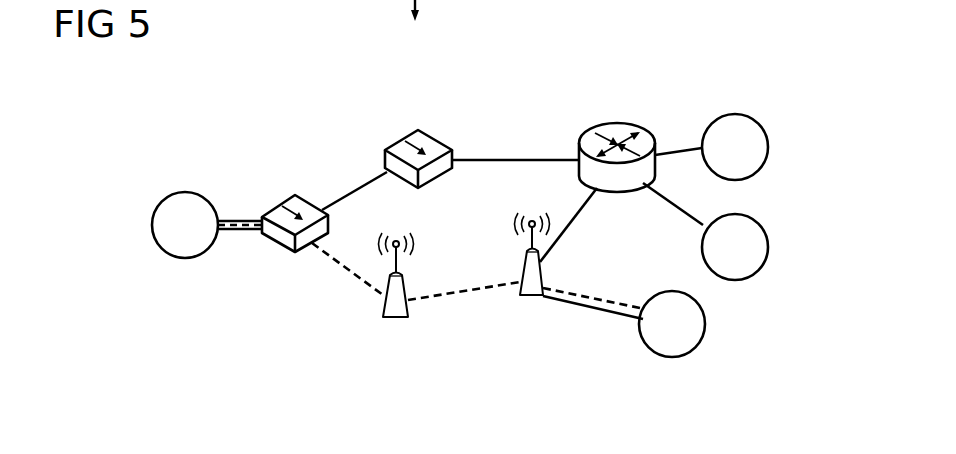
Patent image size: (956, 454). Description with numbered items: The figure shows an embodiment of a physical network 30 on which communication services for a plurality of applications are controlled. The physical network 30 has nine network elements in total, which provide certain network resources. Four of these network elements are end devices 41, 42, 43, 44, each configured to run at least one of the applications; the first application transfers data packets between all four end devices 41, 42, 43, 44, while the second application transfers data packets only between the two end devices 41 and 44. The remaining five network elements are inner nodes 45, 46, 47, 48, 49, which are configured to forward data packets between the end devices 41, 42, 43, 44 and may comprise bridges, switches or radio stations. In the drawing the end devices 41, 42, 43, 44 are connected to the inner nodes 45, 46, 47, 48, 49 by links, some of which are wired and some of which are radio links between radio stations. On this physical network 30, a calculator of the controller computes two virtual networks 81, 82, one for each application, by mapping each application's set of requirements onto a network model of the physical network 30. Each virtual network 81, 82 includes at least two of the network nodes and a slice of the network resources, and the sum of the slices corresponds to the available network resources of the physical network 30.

The physical network 30 is at (120, 176).
The end device 41 is at (185, 205).
The end device 42 is at (733, 123).
The end device 43 is at (755, 252).
The end device 44 is at (695, 330).
The inner node 45 is at (300, 213).
The inner node 46 is at (418, 142).
The inner node 47 is at (618, 130).
The inner node 48 is at (395, 310).
The inner node 49 is at (530, 296).
The virtual network 81 is at (533, 131).
The virtual network 82 is at (463, 325).